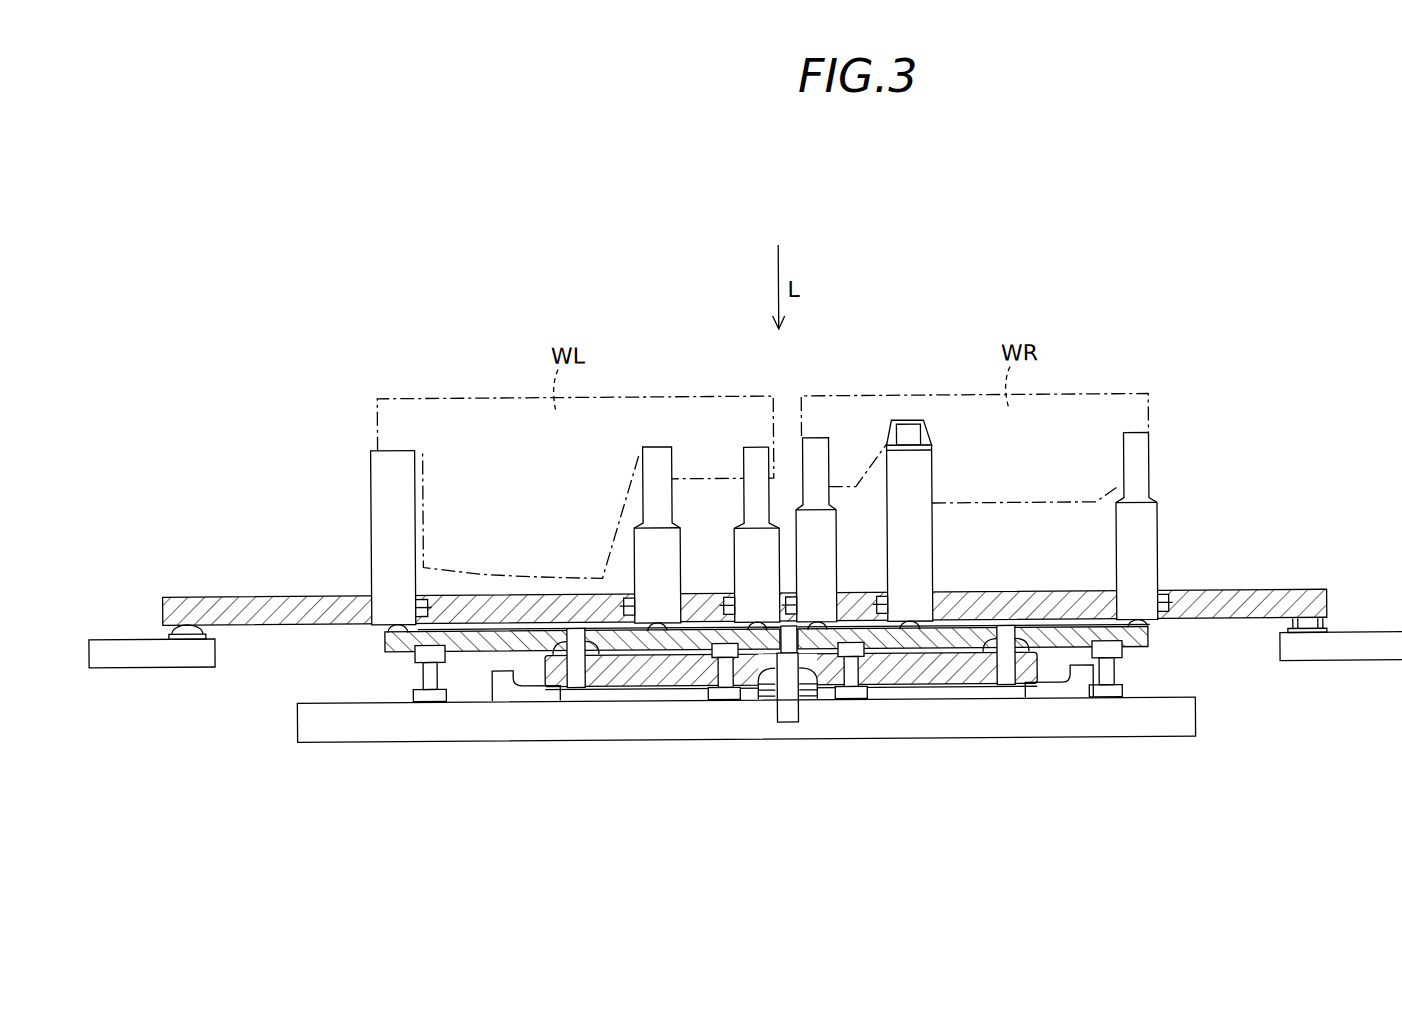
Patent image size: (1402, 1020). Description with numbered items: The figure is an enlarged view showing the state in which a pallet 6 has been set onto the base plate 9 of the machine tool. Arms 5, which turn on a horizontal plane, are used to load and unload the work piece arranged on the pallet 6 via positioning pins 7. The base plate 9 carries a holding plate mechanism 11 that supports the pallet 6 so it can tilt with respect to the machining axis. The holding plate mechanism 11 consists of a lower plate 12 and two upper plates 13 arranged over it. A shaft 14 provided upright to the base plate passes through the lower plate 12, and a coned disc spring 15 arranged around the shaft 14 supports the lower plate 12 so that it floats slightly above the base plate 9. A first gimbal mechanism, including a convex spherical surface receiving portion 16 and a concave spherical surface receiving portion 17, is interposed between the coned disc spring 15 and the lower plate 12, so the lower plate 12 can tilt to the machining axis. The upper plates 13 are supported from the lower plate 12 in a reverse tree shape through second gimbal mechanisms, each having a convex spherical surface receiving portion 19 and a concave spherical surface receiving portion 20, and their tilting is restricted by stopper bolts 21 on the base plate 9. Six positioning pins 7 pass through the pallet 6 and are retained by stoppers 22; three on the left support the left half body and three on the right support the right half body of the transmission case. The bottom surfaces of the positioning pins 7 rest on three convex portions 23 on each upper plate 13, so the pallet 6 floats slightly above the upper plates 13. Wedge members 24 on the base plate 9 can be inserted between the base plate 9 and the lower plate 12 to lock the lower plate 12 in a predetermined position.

The arm 5 is at (136, 648).
The pallet 6 is at (272, 598).
The positioning pin 7 is at (373, 472).
The base plate 9 is at (985, 728).
The holding plate mechanism 11 is at (1205, 668).
The lower plate 12 is at (648, 672).
The upper plate 13 is at (480, 648).
The shaft 14 is at (786, 705).
The coned disc spring 15 is at (763, 697).
The convex spherical surface receiving portion 16 is at (805, 698).
The concave spherical surface receiving portion 17 is at (840, 692).
The convex spherical surface receiving portion 19 is at (597, 660).
The concave spherical surface receiving portion 20 is at (598, 632).
The stopper bolt 21 is at (425, 678).
The stopper 22 is at (427, 600).
The convex portion 23 is at (372, 615).
The wedge member 24 is at (545, 692).